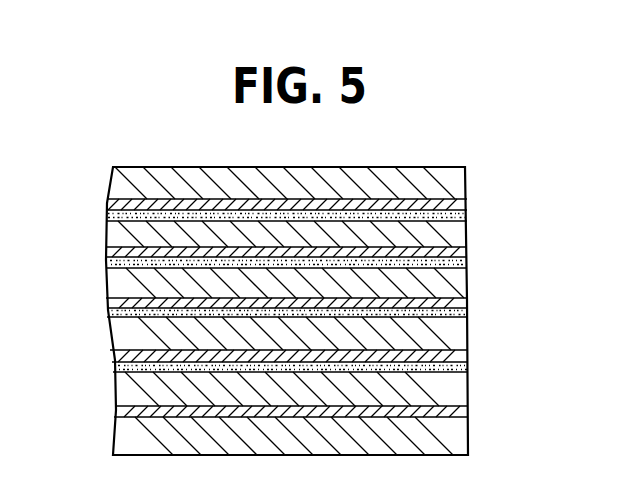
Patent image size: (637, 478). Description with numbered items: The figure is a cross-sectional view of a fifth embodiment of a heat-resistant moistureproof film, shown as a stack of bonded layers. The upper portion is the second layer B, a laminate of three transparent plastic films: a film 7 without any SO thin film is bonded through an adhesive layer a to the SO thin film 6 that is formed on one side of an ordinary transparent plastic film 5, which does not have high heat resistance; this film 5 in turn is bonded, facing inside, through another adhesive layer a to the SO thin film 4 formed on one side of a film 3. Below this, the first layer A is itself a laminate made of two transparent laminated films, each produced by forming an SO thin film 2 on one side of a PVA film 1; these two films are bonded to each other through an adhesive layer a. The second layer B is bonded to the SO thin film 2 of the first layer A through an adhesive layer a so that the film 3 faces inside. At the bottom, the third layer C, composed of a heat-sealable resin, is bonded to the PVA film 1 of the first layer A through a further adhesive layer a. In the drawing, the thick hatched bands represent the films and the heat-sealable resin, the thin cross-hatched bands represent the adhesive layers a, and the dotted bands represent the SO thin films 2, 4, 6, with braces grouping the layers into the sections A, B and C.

The film 7 is at (181, 167).
The adhesive layer a is at (108, 204).
The SO thin film 6 is at (108, 216).
The ordinary transparent plastic film 5 is at (106, 233).
The SO thin film 4 is at (107, 262).
The film 3 is at (112, 284).
The SO thin film 2 is at (110, 312).
The PVA film 1 is at (112, 338).
The first layer A is at (487, 307).
The second layer B is at (487, 167).
The third layer C is at (487, 412).